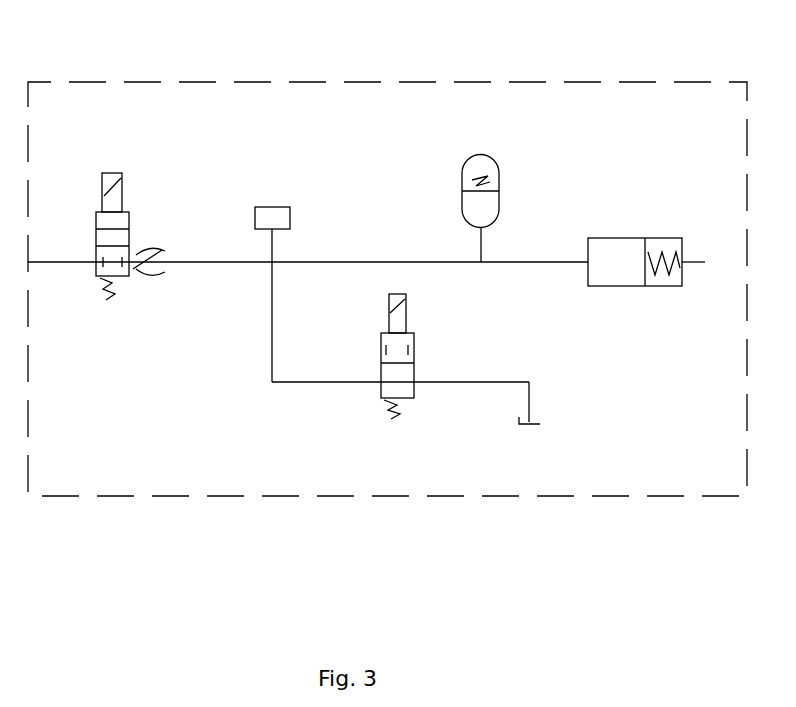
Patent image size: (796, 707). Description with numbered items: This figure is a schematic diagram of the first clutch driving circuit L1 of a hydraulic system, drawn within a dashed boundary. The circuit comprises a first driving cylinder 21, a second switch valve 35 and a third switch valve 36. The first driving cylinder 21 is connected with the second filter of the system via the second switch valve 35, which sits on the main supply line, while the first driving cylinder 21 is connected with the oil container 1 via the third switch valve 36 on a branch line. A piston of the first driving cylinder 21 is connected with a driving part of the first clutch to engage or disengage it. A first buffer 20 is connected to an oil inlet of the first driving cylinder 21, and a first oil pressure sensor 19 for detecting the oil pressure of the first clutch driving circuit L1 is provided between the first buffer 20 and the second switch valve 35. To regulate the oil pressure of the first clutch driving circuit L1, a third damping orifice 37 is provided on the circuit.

The first clutch driving circuit L1 is at (387, 252).
The second switch valve 35 is at (118, 218).
The third damping orifice 37 is at (162, 250).
The first oil pressure sensor 19 is at (269, 212).
The first buffer 20 is at (490, 197).
The first driving cylinder 21 is at (608, 245).
The third switch valve 36 is at (408, 357).
The oil container 1 is at (535, 425).